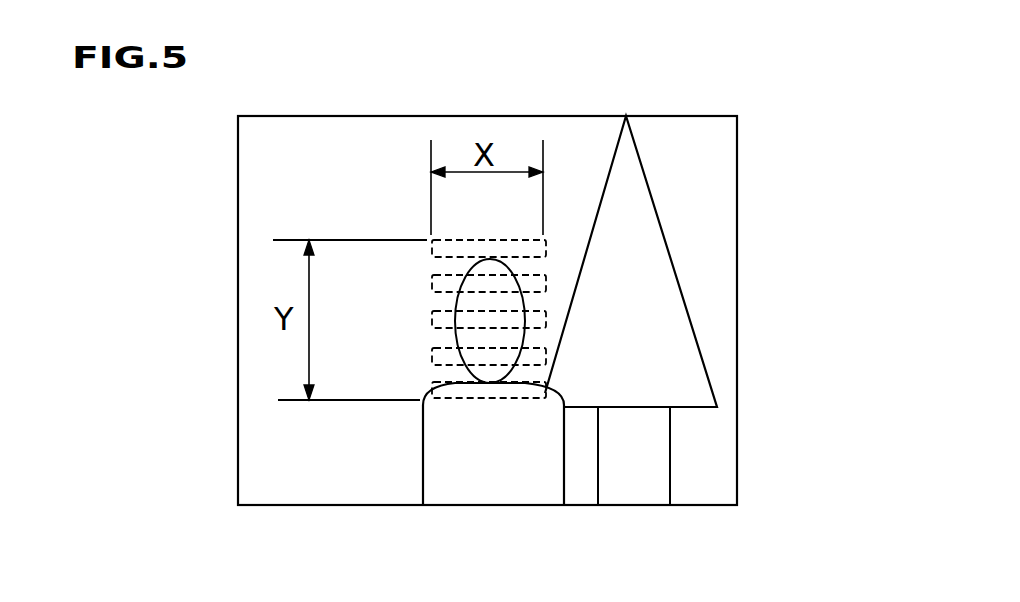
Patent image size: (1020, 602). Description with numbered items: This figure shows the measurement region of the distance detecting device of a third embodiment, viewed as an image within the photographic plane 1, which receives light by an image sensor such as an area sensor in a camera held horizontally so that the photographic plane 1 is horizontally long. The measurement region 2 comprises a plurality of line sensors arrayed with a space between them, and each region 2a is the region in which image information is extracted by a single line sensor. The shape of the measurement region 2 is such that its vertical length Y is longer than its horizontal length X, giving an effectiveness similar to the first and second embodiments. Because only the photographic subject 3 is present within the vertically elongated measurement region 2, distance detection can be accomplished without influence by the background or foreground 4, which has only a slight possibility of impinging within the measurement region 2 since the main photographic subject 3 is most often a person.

The photographic plane 1 is at (737, 158).
The measurement region 2 is at (482, 274).
The region of a single line sensor 2a is at (546, 246).
The photographic subject 3 is at (524, 483).
The background 4 is at (668, 338).